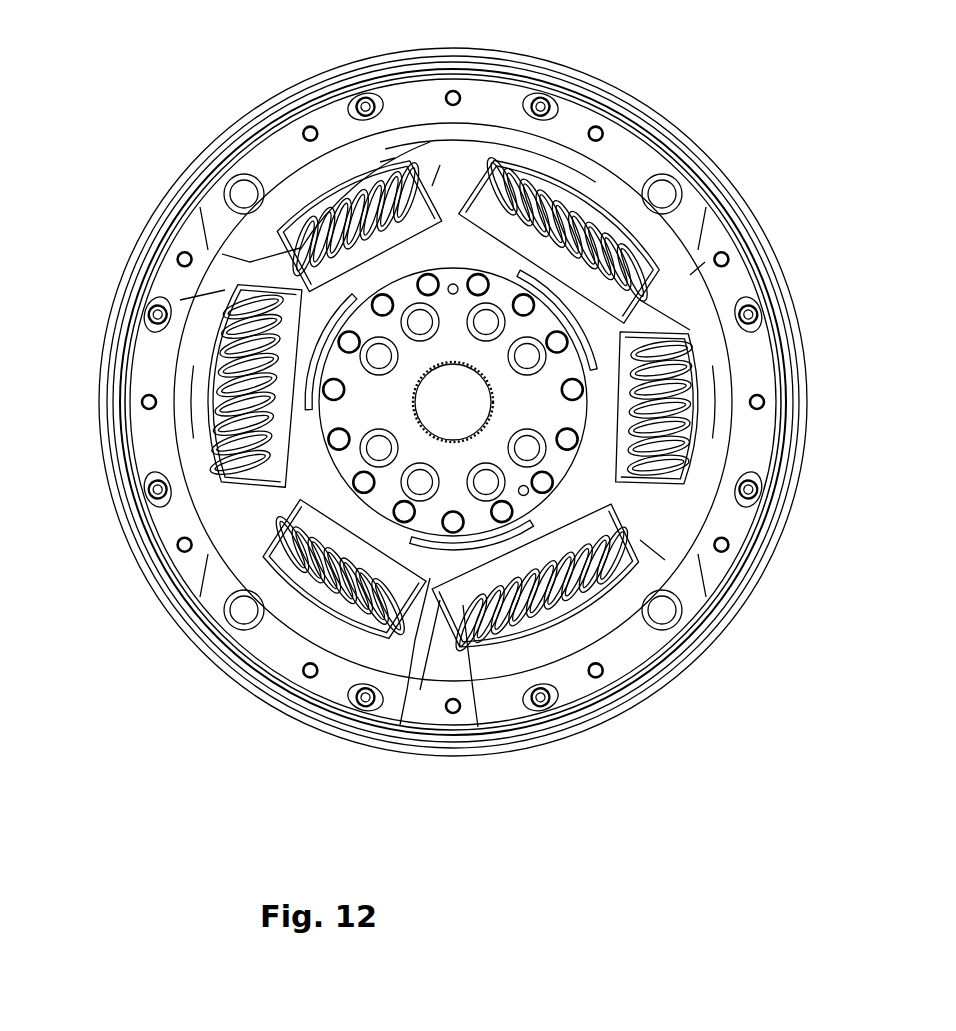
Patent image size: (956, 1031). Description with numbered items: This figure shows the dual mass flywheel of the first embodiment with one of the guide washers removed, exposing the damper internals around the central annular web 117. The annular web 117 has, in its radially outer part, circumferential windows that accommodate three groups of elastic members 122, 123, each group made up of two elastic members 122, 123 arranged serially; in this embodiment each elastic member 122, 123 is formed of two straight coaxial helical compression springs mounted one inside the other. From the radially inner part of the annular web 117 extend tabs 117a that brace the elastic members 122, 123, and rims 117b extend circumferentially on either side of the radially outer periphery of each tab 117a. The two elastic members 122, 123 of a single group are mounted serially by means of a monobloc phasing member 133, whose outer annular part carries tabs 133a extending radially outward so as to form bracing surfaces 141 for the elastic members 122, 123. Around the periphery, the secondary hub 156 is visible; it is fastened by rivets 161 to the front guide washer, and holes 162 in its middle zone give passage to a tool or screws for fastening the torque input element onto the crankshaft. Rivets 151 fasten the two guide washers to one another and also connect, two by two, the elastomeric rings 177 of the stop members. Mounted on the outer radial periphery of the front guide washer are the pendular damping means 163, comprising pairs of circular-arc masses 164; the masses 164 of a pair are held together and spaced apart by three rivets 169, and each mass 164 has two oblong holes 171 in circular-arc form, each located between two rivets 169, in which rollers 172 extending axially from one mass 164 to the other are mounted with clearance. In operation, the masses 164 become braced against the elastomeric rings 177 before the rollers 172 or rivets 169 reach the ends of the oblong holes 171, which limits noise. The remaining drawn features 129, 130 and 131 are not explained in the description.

The annular web 117 is at (372, 270).
The tabs 117a is at (437, 185).
The rims 117b is at (383, 160).
The rivets 169 is at (453, 95).
The rollers 172 is at (540, 104).
The oblong holes 171 is at (557, 68).
The elastomeric rings 177 is at (240, 190).
The rivets 151 is at (240, 170).
The tabs 133a is at (222, 254).
The phasing member 133 is at (185, 303).
The holes 162 is at (167, 385).
The secondary hub 156 is at (615, 225).
The bracing surfaces 141 is at (538, 238).
The pendular damping means 163 is at (722, 268).
The masses 164 is at (753, 347).
The elastic member 123 is at (330, 626).
The arm 131 is at (397, 707).
The arm edge 130 is at (483, 707).
The rivets 161 is at (539, 657).
The elastic member 122 is at (637, 558).
The spring stop 129 is at (678, 642).